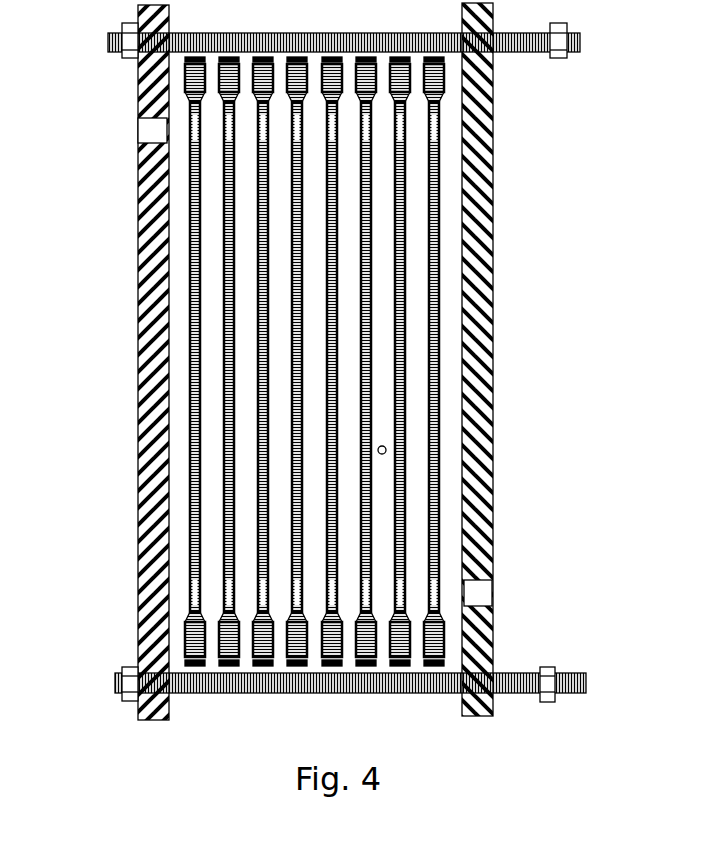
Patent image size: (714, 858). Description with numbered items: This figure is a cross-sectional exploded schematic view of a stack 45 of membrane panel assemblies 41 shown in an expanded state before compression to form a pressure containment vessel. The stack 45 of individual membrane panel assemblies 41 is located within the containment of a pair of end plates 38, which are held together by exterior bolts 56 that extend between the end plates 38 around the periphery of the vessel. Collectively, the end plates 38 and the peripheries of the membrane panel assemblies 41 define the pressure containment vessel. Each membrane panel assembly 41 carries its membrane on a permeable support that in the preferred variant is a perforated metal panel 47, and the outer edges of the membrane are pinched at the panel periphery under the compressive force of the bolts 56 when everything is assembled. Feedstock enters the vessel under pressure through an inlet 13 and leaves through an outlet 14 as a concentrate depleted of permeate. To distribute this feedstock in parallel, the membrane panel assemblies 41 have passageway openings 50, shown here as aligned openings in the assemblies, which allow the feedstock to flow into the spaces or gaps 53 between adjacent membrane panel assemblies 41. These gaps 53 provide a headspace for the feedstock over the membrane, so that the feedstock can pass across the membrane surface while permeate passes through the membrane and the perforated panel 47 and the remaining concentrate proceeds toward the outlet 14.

The bolts 56 is at (112, 38).
The inlet 13 is at (152, 128).
The membrane panel assemblies 41 is at (129, 376).
The end plates 38 is at (155, 443).
The perforated metal panel 47 is at (129, 376).
The passageway openings 50 is at (195, 592).
The gaps 53 is at (415, 193).
The stack 45 is at (385, 448).
The outlet 14 is at (478, 593).